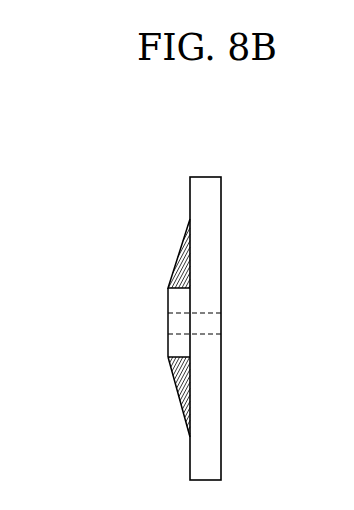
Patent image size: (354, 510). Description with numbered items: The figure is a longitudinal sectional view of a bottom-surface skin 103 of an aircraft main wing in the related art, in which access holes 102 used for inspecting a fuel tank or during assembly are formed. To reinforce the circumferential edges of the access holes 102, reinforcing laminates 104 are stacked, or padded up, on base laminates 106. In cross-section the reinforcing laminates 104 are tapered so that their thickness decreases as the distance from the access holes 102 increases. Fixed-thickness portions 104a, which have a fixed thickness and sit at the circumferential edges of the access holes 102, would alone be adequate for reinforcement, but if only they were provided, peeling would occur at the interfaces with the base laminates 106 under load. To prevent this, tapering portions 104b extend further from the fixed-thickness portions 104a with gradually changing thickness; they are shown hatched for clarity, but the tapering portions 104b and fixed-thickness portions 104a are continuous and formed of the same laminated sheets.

The bottom-surface skin 103 is at (165, 208).
The base laminates 106 is at (207, 232).
The access holes 102 is at (180, 323).
The reinforcing laminates 104 is at (67, 325).
The fixed-thickness portions 104a is at (172, 344).
The tapering portions 104b is at (180, 393).